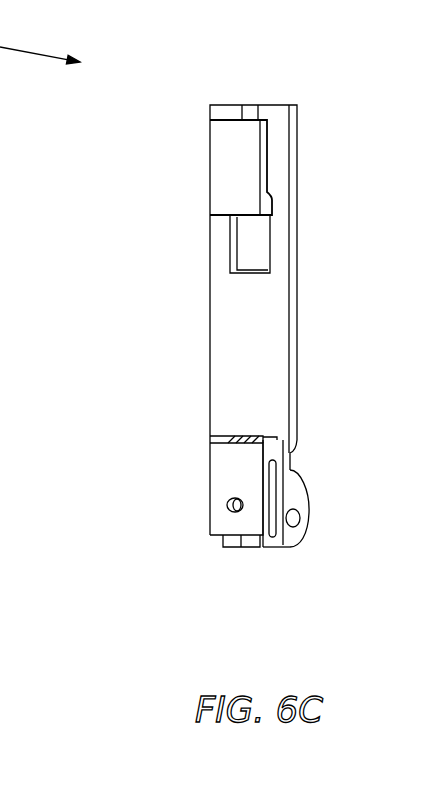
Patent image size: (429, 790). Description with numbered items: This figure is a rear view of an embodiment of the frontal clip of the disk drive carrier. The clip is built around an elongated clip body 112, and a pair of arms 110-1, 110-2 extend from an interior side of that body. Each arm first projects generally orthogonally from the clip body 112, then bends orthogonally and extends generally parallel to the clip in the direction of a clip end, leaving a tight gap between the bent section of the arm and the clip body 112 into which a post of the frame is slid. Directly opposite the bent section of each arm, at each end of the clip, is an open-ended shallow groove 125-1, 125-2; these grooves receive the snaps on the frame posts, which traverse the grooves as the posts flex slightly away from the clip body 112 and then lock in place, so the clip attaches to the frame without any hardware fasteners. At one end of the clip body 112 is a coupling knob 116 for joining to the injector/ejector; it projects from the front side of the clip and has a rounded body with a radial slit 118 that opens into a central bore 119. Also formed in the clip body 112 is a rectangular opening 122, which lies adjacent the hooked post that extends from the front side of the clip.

The clip body 112 is at (228, 340).
The arm 110-1 is at (218, 173).
The arm 110-2 is at (238, 468).
The rectangular opening 122 is at (255, 233).
The open-ended shallow groove 125-1 is at (262, 94).
The open-ended shallow groove 125-2 is at (246, 554).
The radial slit 118 is at (304, 491).
The central bore 119 is at (307, 518).
The coupling knob 116 is at (288, 546).